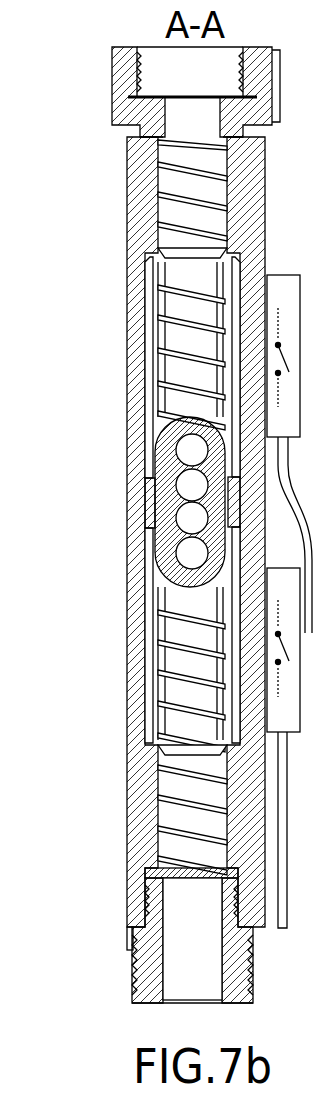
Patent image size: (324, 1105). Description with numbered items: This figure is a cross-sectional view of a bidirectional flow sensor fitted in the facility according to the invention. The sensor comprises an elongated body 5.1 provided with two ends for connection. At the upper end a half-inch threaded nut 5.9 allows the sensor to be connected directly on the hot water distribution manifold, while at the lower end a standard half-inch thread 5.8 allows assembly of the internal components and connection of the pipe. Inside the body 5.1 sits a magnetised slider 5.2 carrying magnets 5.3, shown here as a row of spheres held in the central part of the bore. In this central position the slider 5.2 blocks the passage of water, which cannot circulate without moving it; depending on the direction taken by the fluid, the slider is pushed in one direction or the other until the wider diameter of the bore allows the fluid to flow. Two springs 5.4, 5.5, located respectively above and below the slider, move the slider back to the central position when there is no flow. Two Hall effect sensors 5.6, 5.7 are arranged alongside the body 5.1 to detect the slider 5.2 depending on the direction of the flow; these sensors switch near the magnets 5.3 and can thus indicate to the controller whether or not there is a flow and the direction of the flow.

The body 5.1 is at (133, 210).
The slider 5.2 is at (150, 473).
The magnets 5.3 is at (183, 555).
The spring 5.4 is at (177, 350).
The spring 5.5 is at (187, 827).
The Hall effect sensor 5.6 is at (0, 660).
The Hall effect sensor 5.7 is at (0, 252).
The standard thread 5.8 is at (188, 970).
The threaded nut 5.9 is at (153, 77).